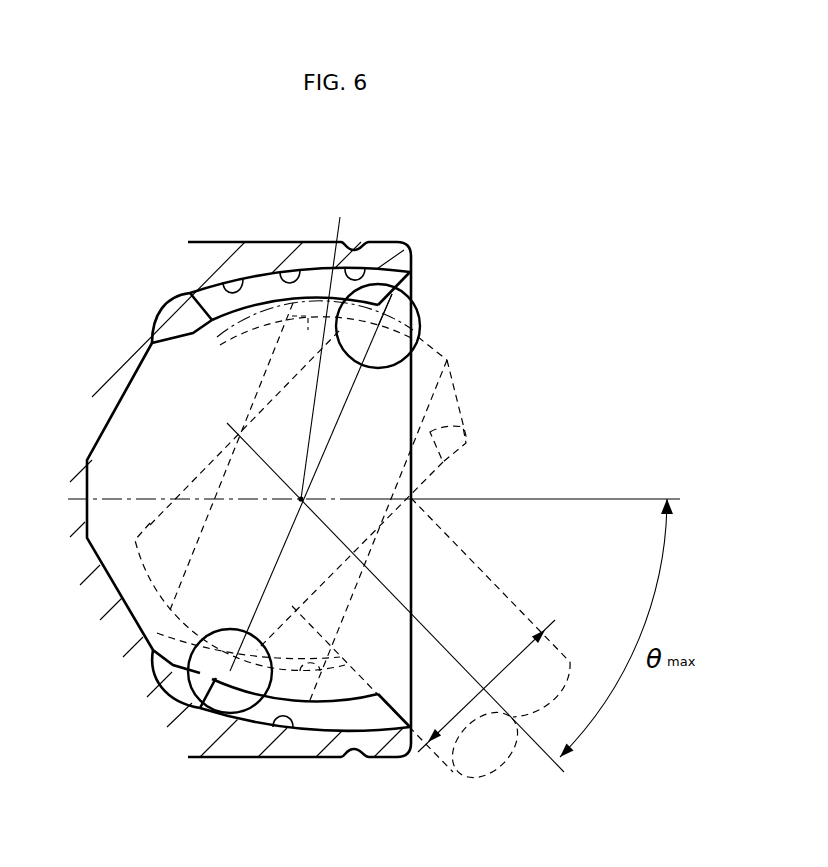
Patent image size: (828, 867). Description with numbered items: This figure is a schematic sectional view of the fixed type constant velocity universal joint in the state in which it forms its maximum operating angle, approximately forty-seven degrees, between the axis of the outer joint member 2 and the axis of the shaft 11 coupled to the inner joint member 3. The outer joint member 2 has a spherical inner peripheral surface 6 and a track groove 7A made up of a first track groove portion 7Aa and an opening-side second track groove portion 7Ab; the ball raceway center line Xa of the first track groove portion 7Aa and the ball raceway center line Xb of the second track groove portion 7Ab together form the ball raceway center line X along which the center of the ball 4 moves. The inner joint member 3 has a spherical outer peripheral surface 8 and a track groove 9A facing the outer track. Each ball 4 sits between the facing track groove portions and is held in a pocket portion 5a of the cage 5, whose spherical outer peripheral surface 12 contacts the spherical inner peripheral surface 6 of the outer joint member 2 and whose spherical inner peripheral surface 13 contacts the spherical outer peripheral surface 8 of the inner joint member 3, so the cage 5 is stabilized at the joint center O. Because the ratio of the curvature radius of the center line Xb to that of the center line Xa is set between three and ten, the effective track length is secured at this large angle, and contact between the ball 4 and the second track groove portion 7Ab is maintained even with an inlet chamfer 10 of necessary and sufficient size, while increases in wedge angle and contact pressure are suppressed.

The outer joint member 2 is at (323, 240).
The inner joint member 3 is at (437, 477).
The ball 4 is at (420, 324).
The cage 5 is at (443, 381).
The pocket portion 5a is at (418, 336).
The spherical inner peripheral surface 6 is at (268, 700).
The cage 7A is at (276, 271).
The first track groove portion 7Aa is at (217, 282).
The second track groove portion 7Ab is at (379, 282).
The spherical outer peripheral surface 8 is at (122, 588).
The snap ring groove 9A is at (430, 432).
The inlet chamfer 10 is at (412, 280).
The shaft 11 is at (433, 750).
The spherical outer peripheral surface 12 is at (150, 672).
The spherical inner peripheral surface 13 is at (325, 660).
The joint center O is at (297, 502).
The ball center X is at (300, 318).
The ball raceway center line Xa is at (227, 333).
The ball raceway center line Xb is at (418, 304).